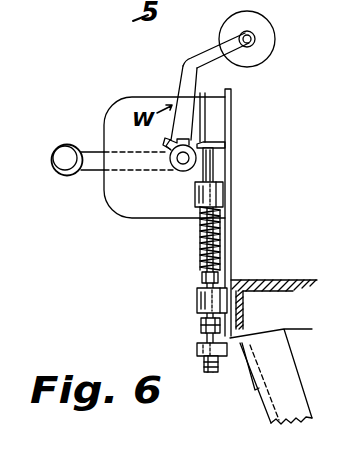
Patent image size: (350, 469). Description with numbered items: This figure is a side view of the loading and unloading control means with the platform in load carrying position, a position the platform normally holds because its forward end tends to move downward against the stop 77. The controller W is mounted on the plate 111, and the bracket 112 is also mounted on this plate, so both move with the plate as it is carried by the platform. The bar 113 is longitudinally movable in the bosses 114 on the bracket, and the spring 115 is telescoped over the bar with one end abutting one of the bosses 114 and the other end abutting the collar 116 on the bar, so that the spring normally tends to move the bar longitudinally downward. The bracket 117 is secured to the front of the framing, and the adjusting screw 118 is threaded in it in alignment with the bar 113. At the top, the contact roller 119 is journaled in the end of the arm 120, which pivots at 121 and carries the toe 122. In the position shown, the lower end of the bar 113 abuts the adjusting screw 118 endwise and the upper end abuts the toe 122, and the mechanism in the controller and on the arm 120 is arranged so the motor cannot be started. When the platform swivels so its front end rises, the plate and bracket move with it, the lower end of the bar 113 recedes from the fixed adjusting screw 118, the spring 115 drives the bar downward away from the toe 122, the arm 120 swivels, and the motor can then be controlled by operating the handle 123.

The stop 77 is at (254, 334).
The plate 111 is at (232, 108).
The bracket 112 is at (221, 210).
The bar 113 is at (214, 171).
The bosses 114 is at (195, 190).
The spring 115 is at (200, 236).
The collar 116 is at (202, 278).
The bracket 117 is at (239, 351).
The adjusting screw 118 is at (200, 349).
The contact roller 119 is at (275, 46).
The arm 120 is at (203, 53).
The pivot 121 is at (180, 168).
The toe 122 is at (225, 146).
The handle 123 is at (70, 151).